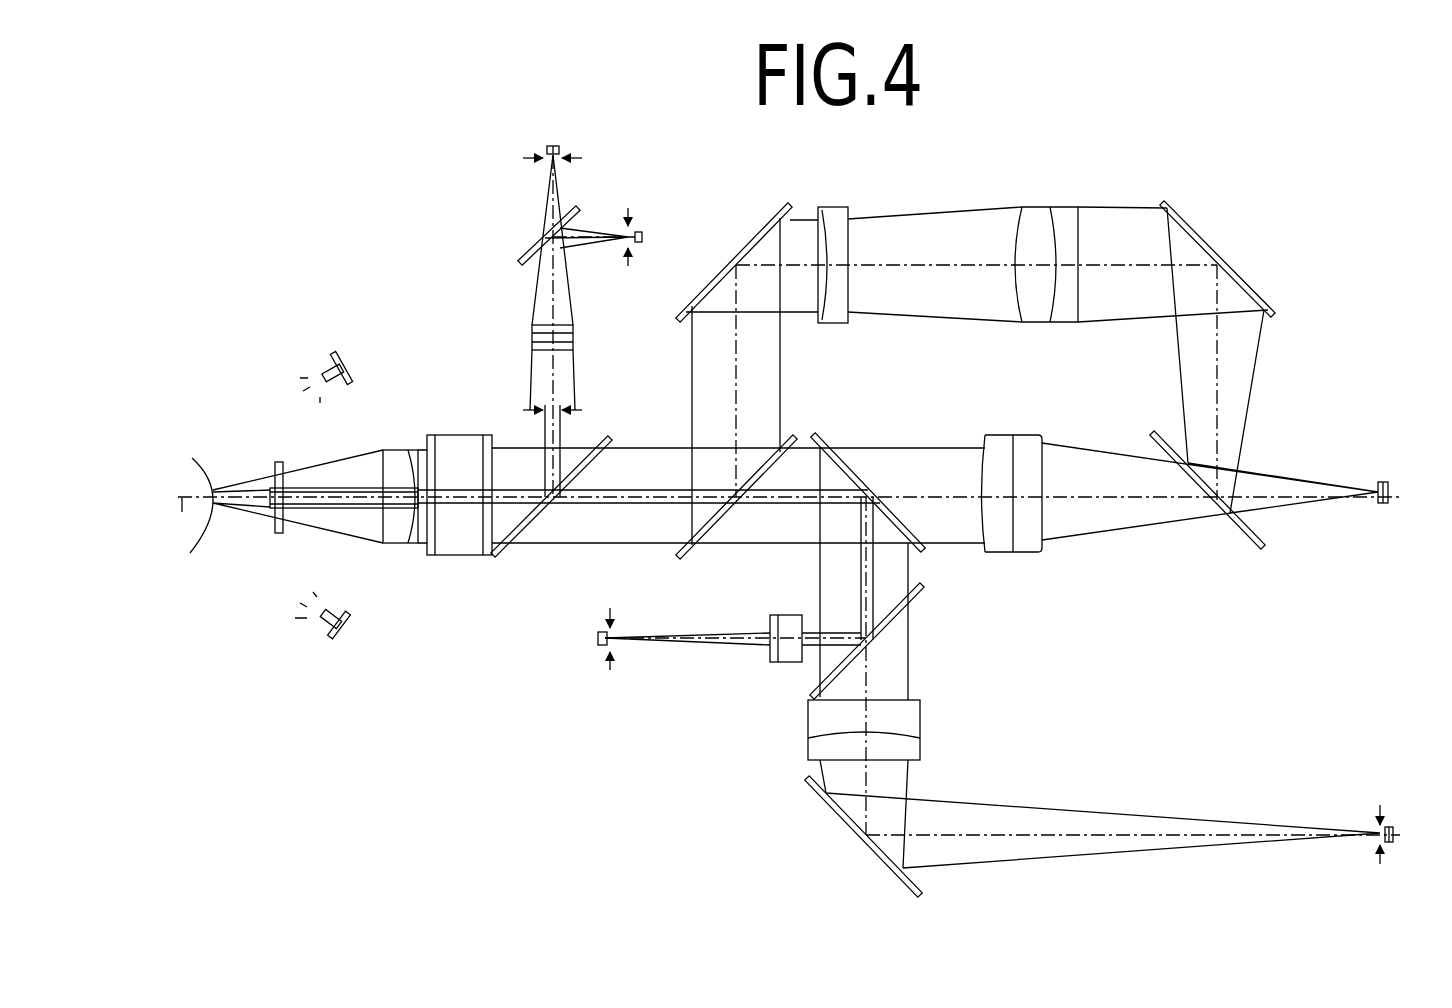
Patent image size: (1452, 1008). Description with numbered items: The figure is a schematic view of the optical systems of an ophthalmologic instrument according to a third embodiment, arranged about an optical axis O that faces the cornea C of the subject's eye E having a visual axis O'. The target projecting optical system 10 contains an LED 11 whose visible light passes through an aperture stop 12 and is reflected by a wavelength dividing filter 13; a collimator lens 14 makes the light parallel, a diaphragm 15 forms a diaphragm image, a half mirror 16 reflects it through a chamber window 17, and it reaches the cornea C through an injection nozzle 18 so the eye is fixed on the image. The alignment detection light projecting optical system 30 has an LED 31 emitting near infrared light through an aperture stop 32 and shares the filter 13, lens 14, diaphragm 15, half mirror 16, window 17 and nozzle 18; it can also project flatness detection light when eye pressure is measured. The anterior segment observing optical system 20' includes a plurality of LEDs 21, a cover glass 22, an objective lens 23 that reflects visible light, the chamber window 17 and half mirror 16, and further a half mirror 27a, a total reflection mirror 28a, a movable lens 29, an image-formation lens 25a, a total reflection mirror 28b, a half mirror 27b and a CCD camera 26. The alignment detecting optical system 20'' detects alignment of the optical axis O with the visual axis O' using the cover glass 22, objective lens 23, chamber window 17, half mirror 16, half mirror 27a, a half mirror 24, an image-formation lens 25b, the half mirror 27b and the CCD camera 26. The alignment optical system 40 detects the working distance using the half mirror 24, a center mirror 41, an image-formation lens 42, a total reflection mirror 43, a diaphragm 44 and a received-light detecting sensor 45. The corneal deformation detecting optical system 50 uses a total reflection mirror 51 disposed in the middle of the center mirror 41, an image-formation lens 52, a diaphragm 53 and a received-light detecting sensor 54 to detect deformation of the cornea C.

The subject's eye E is at (208, 442).
The visual axis O' is at (184, 542).
The cornea C is at (208, 527).
The optical axis O is at (614, 552).
The target projecting optical system 10 is at (650, 198).
The LED 11 is at (643, 240).
The aperture stop 12 is at (628, 262).
The wavelength dividing filter 13 is at (522, 265).
The collimator lens 14 is at (573, 335).
The diaphragm 15 is at (582, 410).
The half mirror 16 is at (524, 533).
The chamber window 17 is at (455, 557).
The injection nozzle 18 is at (333, 485).
The anterior segment observing optical system 20' is at (920, 164).
The alignment detecting optical system 20'' is at (1134, 623).
The LEDs 21 is at (338, 355).
The cover glass 22 is at (279, 535).
The objective lens 23 is at (395, 545).
The half mirror 24 is at (853, 467).
The image-formation lens 25a is at (1040, 215).
The image-formation lens 25b is at (1000, 447).
The CCD camera 26 is at (1378, 503).
The half mirror 27a is at (682, 557).
The half mirror 27b is at (1263, 548).
The total reflection mirror 28a is at (755, 240).
The total reflection mirror 28b is at (1203, 238).
The movable lens 29 is at (833, 218).
The alignment detection light projecting optical system 30 is at (483, 203).
The LED 31 is at (559, 150).
The aperture stop 32 is at (577, 160).
The alignment optical system 40 is at (1090, 788).
The center mirror 41 is at (923, 585).
The image-formation lens 42 is at (920, 720).
The total reflection mirror 43 is at (830, 805).
The diaphragm 44 is at (1380, 857).
The received-light detecting sensor 45 is at (1392, 827).
The corneal deformation detecting optical system 50 is at (648, 727).
The total reflection mirror 51 is at (862, 647).
The image-formation lens 52 is at (787, 625).
The diaphragm 53 is at (610, 668).
The received-light detecting sensor 54 is at (598, 645).